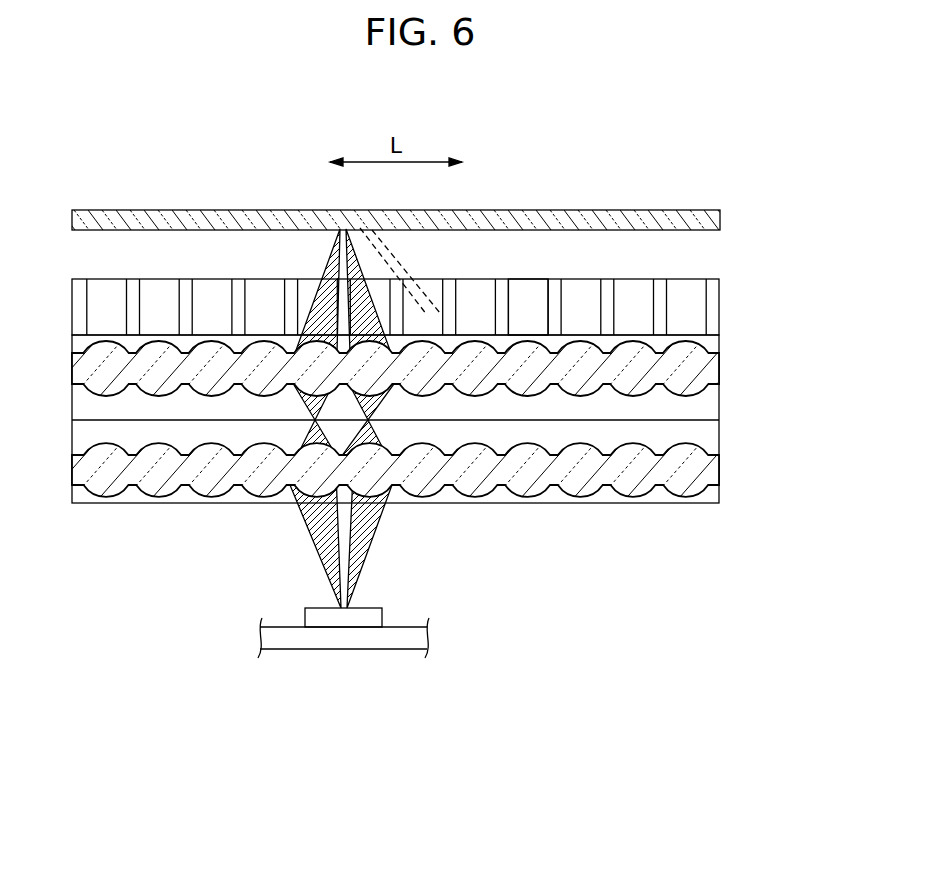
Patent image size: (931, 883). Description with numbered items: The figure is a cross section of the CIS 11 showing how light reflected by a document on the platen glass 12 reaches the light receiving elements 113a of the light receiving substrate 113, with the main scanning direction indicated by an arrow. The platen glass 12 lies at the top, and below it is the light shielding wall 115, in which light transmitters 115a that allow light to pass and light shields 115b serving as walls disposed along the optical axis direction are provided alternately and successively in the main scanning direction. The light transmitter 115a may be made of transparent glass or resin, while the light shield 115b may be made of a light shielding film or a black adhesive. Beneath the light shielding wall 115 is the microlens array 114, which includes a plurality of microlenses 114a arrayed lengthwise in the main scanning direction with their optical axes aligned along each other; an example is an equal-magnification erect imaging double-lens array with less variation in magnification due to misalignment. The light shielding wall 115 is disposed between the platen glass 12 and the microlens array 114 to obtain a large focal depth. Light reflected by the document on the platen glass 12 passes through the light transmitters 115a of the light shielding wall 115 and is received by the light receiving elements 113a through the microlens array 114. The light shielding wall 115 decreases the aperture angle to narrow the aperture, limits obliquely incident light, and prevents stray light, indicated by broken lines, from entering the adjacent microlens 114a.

The CIS 11 is at (188, 770).
The platen glass 12 is at (553, 210).
The light receiving substrate 113 is at (283, 650).
The light receiving elements 113a is at (368, 608).
The microlens array 114 is at (733, 335).
The microlenses 114a is at (594, 498).
The light shielding wall 115 is at (691, 279).
The light transmitters 115a is at (517, 279).
The light shields 115b is at (563, 305).